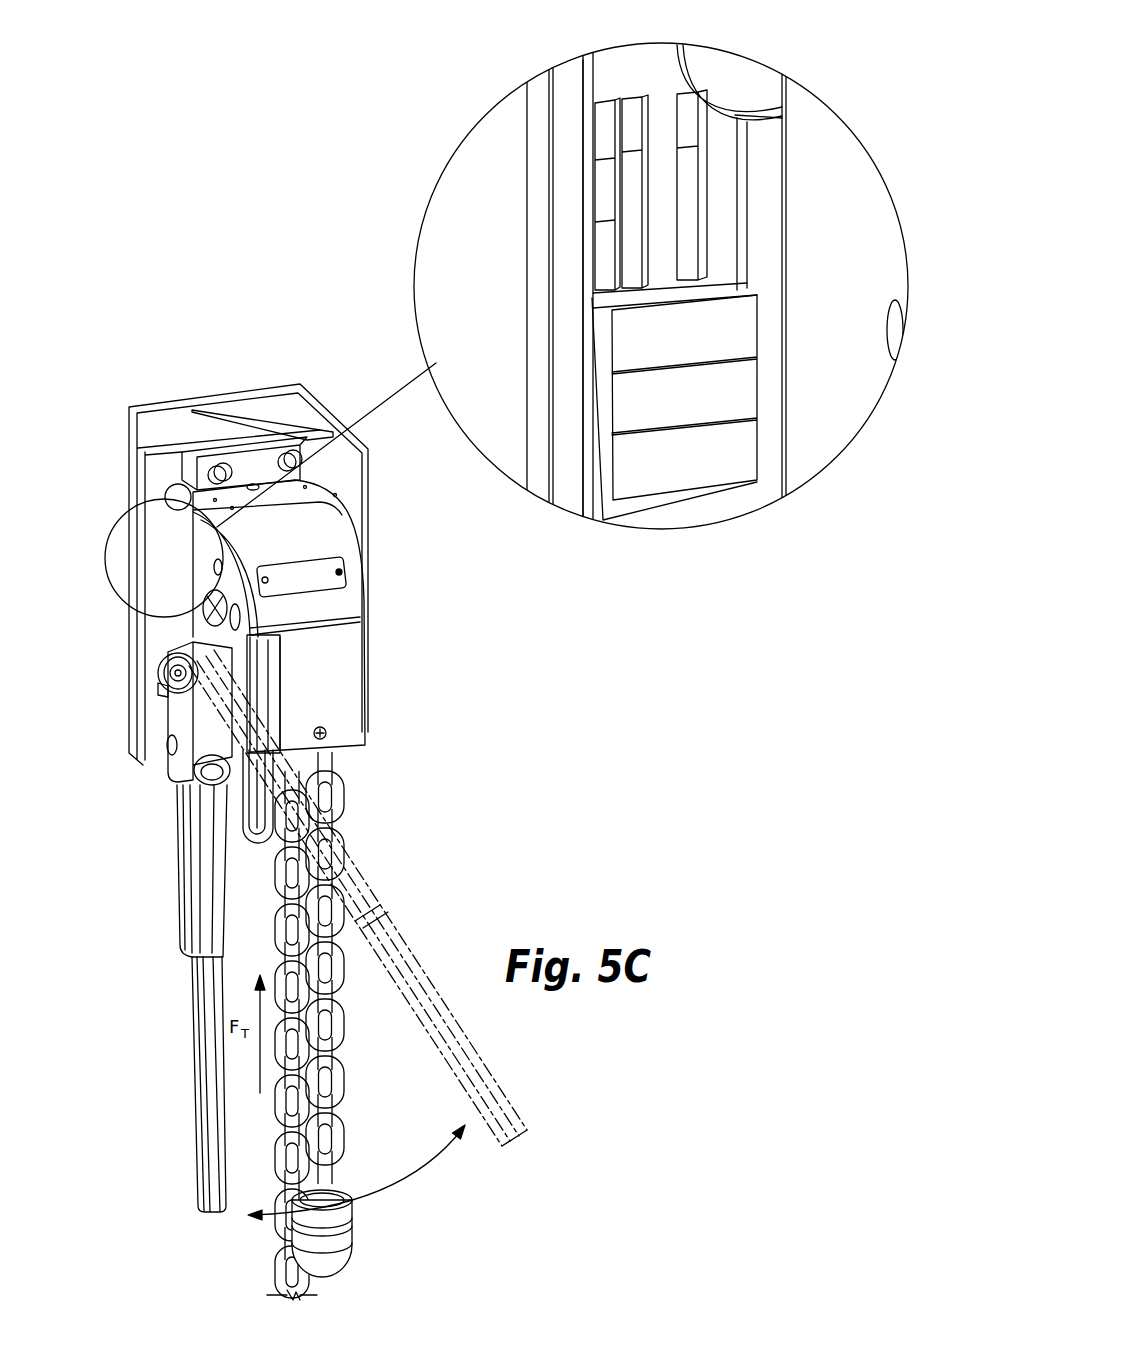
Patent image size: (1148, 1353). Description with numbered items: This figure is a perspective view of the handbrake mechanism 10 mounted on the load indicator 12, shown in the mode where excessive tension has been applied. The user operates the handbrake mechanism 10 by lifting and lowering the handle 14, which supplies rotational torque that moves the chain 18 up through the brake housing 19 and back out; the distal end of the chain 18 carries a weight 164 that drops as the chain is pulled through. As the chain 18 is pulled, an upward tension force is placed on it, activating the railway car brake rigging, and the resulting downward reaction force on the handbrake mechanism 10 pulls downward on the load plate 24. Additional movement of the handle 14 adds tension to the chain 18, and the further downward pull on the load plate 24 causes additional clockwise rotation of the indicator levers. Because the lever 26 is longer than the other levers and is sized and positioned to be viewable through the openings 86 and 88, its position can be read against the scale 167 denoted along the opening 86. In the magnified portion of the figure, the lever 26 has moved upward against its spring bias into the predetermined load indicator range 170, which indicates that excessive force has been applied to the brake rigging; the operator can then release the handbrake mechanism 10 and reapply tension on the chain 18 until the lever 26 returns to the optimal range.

The handbrake mechanism 10 is at (323, 640).
The load indicator 12 is at (121, 456).
The handle 14 is at (187, 992).
The chain 18 is at (330, 1100).
The brake housing 19 is at (348, 692).
The load plate 24 is at (157, 640).
The lever 26 is at (685, 125).
The opening 86 is at (633, 97).
The opening 88 is at (683, 97).
The weight 164 is at (343, 1242).
The scale 167 is at (592, 187).
The predetermined load indicator range 170 is at (608, 122).